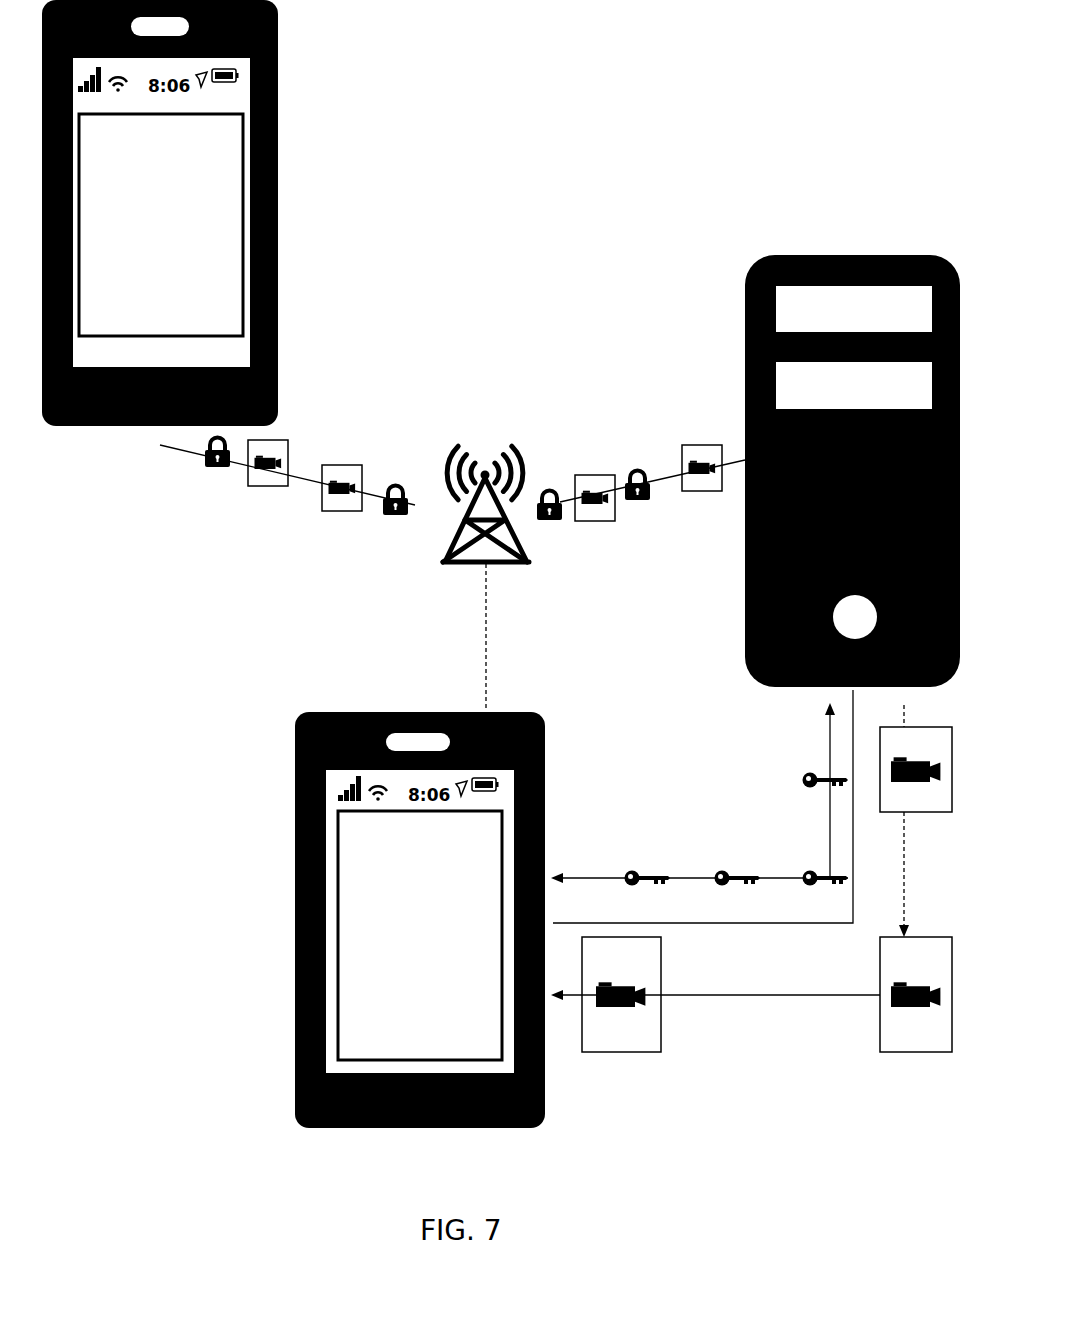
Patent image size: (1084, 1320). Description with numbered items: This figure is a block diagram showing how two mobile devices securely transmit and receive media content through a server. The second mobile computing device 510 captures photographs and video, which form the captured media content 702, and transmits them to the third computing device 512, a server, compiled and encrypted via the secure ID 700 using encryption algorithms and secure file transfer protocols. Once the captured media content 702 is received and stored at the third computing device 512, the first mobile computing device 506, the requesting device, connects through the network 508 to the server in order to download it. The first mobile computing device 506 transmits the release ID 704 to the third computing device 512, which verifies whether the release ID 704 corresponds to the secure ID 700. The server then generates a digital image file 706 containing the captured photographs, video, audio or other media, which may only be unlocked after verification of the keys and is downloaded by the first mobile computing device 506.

The first mobile computing device 506 is at (292, 841).
The network 508 is at (495, 447).
The second mobile computing device 510 is at (287, 153).
The third computing device 512 is at (743, 263).
The secure ID 700 is at (200, 458).
The captured media content 702 is at (268, 487).
The release ID 704 is at (803, 780).
The digital image file 706 is at (893, 1052).